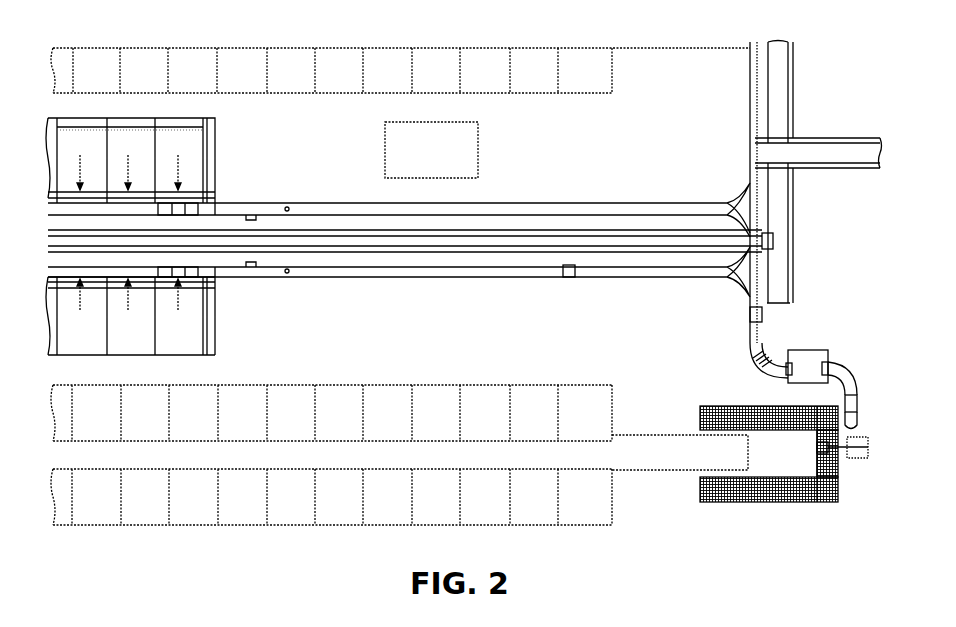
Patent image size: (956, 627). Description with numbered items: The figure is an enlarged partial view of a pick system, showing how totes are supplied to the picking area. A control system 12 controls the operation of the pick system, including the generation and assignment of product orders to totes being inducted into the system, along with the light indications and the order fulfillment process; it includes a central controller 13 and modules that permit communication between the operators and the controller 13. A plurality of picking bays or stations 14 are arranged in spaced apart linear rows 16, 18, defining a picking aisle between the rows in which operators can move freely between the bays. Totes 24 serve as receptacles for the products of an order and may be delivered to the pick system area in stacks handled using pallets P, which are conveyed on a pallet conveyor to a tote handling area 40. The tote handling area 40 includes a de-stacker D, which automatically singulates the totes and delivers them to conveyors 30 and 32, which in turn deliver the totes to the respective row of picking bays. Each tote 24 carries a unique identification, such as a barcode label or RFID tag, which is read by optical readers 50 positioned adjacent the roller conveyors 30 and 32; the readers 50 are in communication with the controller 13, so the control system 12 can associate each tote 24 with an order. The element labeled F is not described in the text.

The control system 12 is at (514, 152).
The central controller 13 is at (478, 133).
The picking bays 14 is at (173, 133).
The row 16 is at (222, 334).
The row 18 is at (222, 157).
The totes 24 is at (191, 211).
The conveyor 30 is at (537, 200).
The conveyor 32 is at (366, 279).
The tote handling area 40 is at (760, 503).
The optical readers 50 is at (249, 204).
The de-stacker D is at (812, 350).
The pallets P is at (734, 405).
The filter F is at (850, 460).